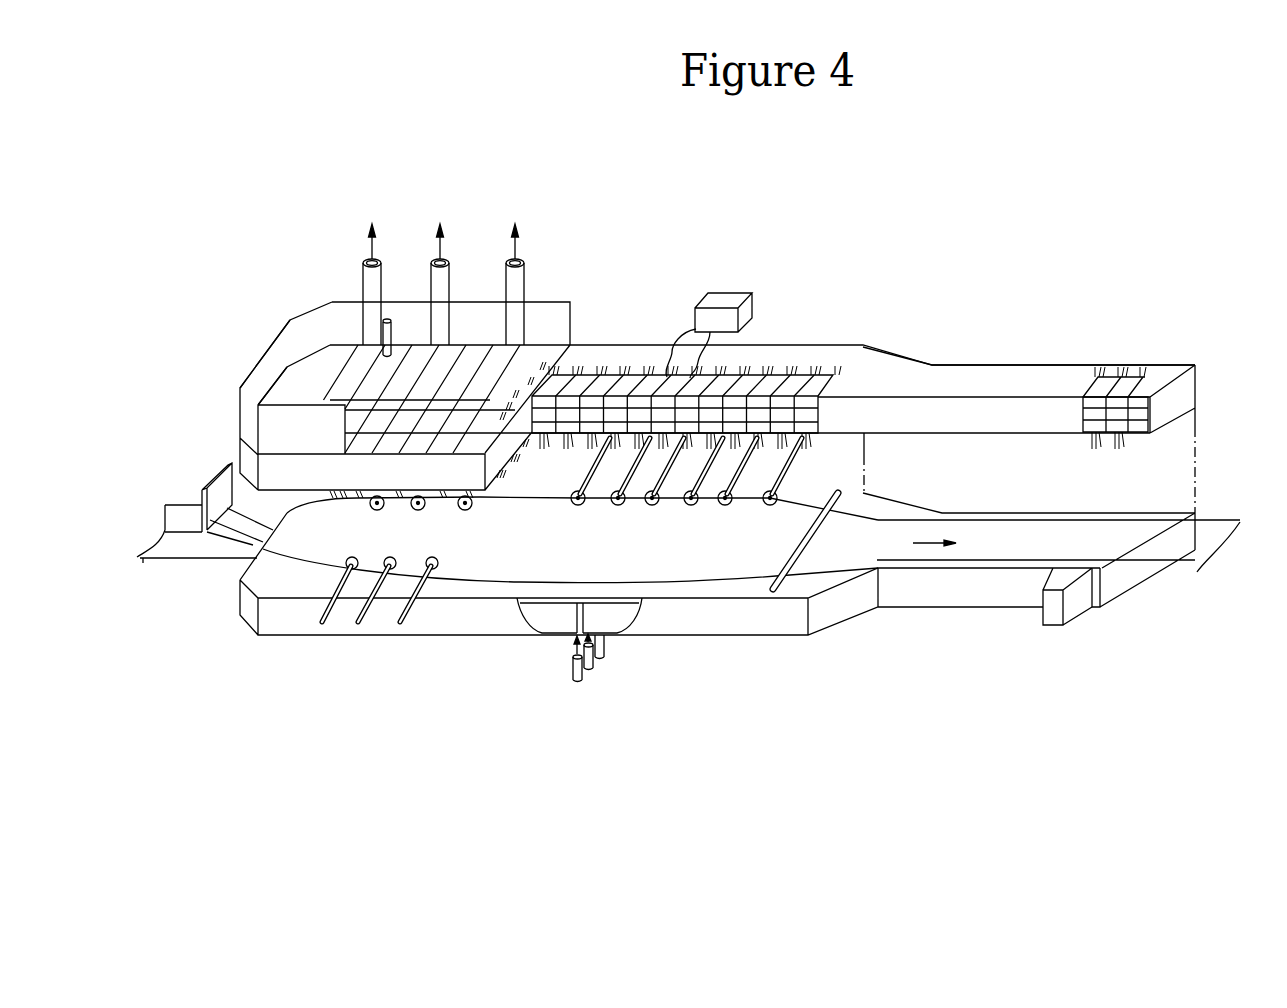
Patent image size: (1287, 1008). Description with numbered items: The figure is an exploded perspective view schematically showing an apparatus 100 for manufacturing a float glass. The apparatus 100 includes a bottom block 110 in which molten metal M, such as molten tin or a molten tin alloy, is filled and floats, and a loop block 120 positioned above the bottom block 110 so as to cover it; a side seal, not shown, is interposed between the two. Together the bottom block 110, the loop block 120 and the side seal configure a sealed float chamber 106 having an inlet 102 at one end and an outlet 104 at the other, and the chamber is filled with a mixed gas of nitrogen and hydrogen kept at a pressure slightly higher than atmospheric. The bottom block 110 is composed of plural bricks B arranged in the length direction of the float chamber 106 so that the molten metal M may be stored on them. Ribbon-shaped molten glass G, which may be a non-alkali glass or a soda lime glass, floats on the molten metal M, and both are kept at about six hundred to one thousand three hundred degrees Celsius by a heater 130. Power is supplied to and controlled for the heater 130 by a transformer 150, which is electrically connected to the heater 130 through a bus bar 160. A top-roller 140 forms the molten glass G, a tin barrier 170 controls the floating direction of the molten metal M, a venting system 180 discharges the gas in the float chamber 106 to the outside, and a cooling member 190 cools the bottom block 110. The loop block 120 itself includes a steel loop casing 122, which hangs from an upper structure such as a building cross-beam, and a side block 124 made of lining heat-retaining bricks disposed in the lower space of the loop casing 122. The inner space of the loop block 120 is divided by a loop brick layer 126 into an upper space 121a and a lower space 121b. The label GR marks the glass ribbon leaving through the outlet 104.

The apparatus for manufacturing a float glass 100 is at (708, 505).
The inlet 102 is at (236, 567).
The outlet 104 is at (1148, 546).
The float chamber 106 is at (1213, 421).
The bottom block 110 is at (840, 631).
The loop block 120 is at (299, 311).
The upper space 121a is at (1040, 365).
The lower space 121b is at (1040, 508).
The loop casing 122 is at (264, 354).
The side block 124 is at (490, 500).
The loop brick layer 126 is at (1051, 434).
The heater 130 is at (514, 479).
The top-roller 140 is at (798, 473).
The transformer 150 is at (750, 292).
The bus bar 160 is at (688, 330).
The tin barrier 170 is at (788, 550).
The venting system 180 is at (359, 273).
The cooling member 190 is at (594, 678).
The molten glass G is at (310, 555).
The molten metal M is at (327, 598).
The bricks B is at (565, 630).
The glass ribbon GR is at (1218, 520).